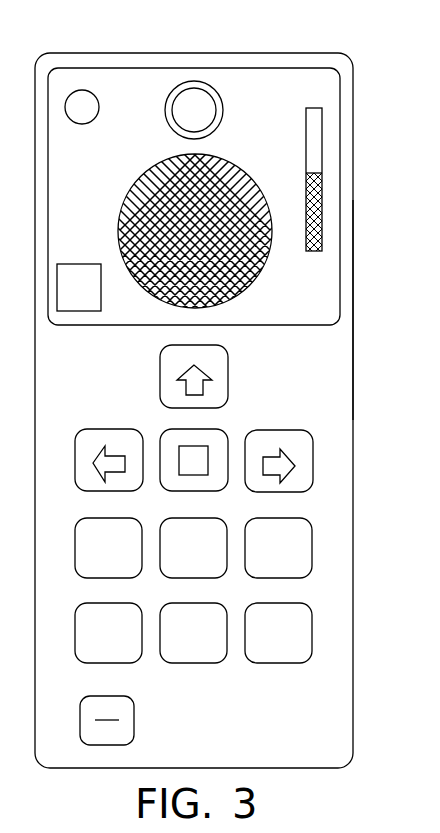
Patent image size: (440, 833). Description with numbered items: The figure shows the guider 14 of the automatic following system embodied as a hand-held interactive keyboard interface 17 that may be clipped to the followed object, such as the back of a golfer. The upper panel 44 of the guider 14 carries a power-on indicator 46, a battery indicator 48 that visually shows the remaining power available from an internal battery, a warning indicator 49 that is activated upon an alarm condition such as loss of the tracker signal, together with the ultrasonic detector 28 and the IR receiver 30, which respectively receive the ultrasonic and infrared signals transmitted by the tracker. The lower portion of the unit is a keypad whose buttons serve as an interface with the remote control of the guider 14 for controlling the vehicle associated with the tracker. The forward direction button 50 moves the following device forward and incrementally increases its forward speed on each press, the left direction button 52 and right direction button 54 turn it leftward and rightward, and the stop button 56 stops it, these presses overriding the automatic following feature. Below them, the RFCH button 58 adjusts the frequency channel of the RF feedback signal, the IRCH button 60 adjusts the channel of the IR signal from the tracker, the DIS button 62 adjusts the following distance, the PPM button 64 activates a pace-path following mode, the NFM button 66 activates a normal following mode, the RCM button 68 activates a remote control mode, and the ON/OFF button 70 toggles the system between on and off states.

The guider 14 is at (374, 372).
The interactive keyboard interface 17 is at (354, 309).
The upper panel 44 is at (290, 78).
The power-on indicator 46 is at (82, 106).
The IR receiver 30 is at (200, 104).
The battery indicator 48 is at (309, 163).
The ultrasonic detector 28 is at (147, 220).
The warning indicator 49 is at (86, 280).
The forward direction button 50 is at (229, 380).
The left direction button 52 is at (109, 428).
The right direction button 54 is at (283, 429).
The stop button 56 is at (194, 428).
The RFCH button 58 is at (101, 518).
The IRCH button 60 is at (190, 518).
The DIS button 62 is at (278, 518).
The PPM button 64 is at (105, 603).
The NFM button 66 is at (190, 603).
The RCM button 68 is at (278, 603).
The ON/OFF button 70 is at (106, 696).